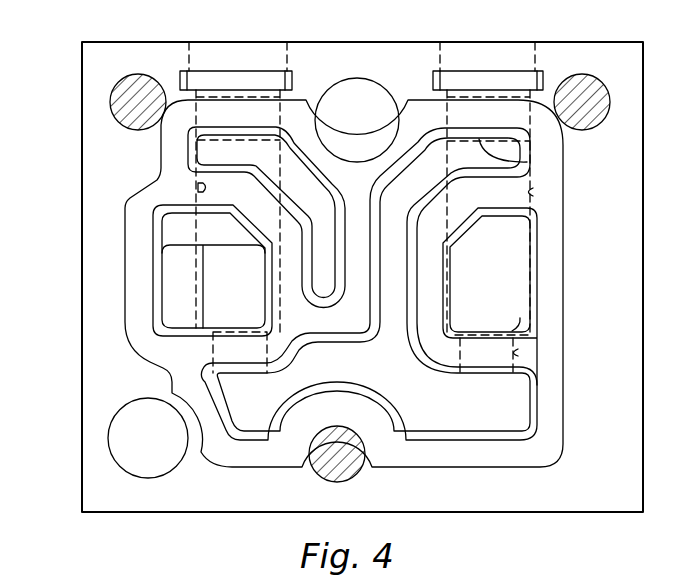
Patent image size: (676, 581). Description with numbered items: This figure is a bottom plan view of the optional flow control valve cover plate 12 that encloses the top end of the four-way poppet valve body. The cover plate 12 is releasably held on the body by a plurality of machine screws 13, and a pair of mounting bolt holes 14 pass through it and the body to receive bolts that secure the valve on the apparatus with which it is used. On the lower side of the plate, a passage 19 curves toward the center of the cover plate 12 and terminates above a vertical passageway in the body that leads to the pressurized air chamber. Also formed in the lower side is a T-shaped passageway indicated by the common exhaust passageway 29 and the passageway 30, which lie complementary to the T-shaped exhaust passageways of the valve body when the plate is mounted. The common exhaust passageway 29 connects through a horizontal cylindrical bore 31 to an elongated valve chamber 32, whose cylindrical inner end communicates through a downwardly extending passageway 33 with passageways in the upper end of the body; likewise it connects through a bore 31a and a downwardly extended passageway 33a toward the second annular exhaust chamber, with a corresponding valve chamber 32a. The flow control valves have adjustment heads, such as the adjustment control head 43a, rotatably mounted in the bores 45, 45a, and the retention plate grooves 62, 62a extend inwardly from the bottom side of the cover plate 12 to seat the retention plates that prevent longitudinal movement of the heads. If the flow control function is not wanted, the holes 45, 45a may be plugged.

The flow control valve cover plate 12 is at (93, 487).
The machine screws 13 is at (128, 77).
The mounting bolt holes 14 is at (354, 78).
The passage 19 is at (303, 187).
The common exhaust passageway 29 is at (405, 386).
The passageway 30 is at (529, 160).
The horizontal cylindrical bore 31 is at (270, 343).
The bore 31a is at (520, 353).
The elongated valve chamber 32 is at (196, 185).
The valve chamber 32a is at (535, 191).
The downwardly extending passageway 33 is at (204, 286).
The downwardly extended passageway 33a is at (453, 276).
The adjustment control head 43a is at (518, 327).
The bore 45 is at (286, 58).
The hole 45a is at (537, 60).
The rectangular slot 62 is at (187, 89).
The rectangular slot 62a is at (443, 88).